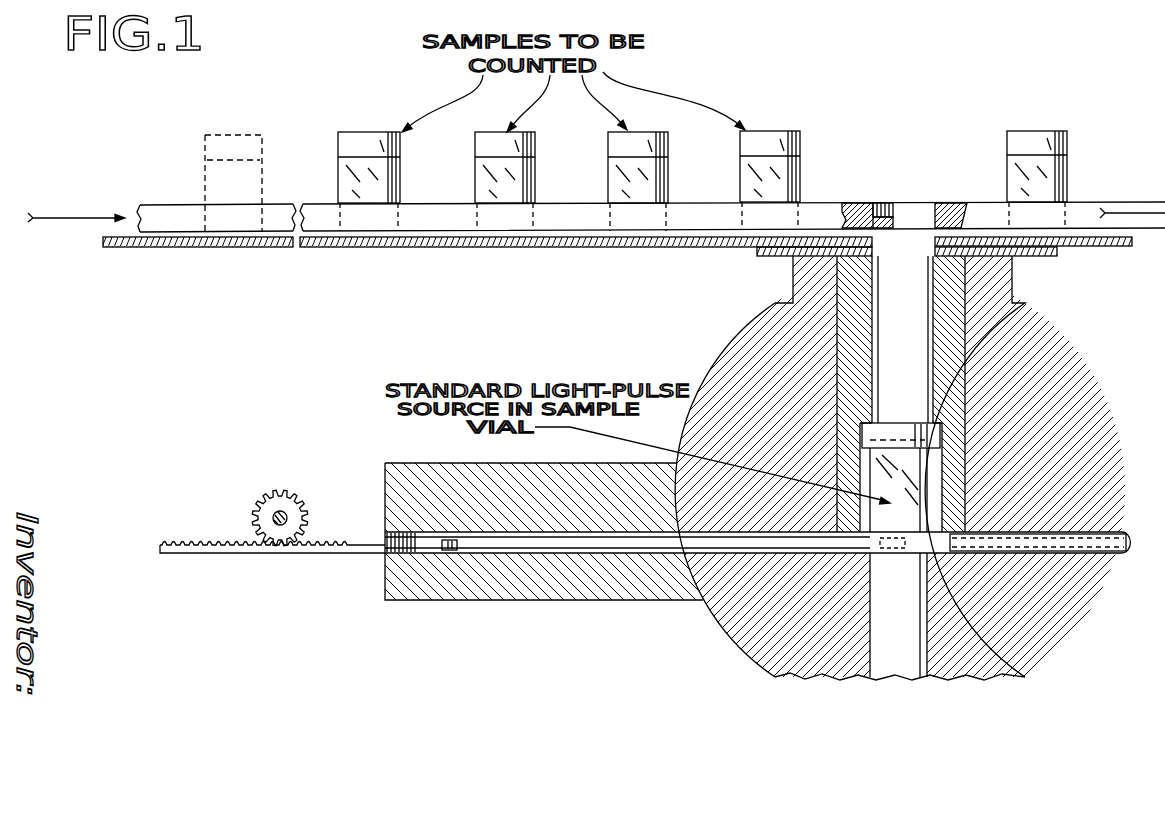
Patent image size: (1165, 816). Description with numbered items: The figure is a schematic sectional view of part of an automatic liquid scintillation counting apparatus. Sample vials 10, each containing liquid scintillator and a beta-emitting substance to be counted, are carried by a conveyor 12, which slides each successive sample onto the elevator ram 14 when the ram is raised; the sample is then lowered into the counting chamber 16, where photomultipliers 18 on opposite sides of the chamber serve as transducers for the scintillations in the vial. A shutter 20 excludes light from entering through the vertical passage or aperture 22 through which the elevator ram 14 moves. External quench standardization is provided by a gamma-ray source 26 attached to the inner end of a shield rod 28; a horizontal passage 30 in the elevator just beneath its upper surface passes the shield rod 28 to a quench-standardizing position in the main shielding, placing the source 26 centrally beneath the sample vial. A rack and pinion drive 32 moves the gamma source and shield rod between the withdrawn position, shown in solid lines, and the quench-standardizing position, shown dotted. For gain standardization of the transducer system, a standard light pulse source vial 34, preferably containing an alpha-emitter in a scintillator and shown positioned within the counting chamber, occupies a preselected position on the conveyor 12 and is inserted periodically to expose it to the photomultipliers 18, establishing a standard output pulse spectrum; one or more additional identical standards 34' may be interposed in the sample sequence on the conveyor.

The vials 10 is at (338, 177).
The conveyor 12 is at (168, 204).
The elevator ram 14 is at (908, 657).
The counting chamber 16 is at (933, 442).
The photomultipliers 18 is at (863, 463).
The shutter 20 is at (883, 248).
The vertical passage or aperture 22 is at (913, 365).
The gamma-ray source 26 is at (443, 555).
The shield rod 28 is at (532, 540).
The horizontal passage 30 is at (872, 550).
The rack and pinion drive 32 is at (228, 528).
The standard light pulse source vial 34 is at (952, 477).
The additional standard vial 34' is at (251, 160).